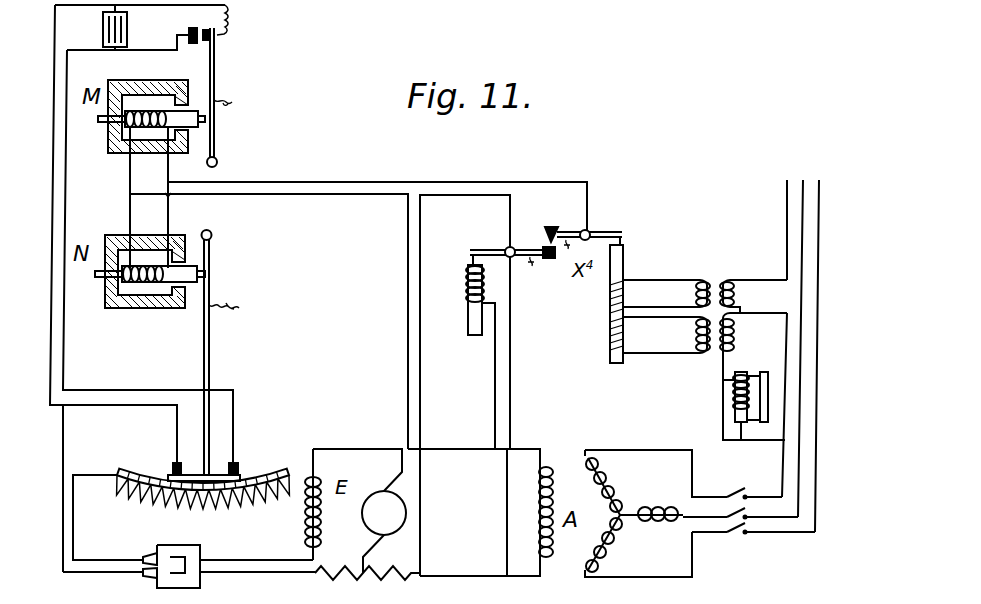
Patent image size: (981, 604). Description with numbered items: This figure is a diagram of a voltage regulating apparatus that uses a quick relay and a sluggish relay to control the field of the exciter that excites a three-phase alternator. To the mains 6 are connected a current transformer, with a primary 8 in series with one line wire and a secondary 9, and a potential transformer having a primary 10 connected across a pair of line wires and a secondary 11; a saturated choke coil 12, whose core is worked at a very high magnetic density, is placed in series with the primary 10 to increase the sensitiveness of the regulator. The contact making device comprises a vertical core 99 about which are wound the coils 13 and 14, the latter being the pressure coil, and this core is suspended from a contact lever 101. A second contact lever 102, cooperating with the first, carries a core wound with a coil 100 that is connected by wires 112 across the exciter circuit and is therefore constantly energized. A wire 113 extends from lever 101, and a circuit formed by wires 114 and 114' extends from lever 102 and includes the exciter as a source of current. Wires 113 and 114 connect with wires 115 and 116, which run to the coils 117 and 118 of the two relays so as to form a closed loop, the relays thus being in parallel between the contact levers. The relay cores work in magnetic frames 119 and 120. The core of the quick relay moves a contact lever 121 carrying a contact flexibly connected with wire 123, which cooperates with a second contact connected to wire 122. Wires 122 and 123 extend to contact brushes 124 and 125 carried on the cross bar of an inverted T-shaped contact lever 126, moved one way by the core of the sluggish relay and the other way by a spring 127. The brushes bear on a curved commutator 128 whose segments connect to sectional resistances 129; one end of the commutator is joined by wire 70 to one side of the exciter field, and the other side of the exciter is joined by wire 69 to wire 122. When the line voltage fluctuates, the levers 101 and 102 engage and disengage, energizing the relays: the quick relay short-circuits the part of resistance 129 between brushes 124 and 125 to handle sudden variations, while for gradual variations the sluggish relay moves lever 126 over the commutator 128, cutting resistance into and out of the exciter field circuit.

The mains 6 is at (818, 217).
The current transformer primary 8 is at (733, 295).
The current transformer secondary 9 is at (703, 288).
The potential transformer primary 10 is at (733, 340).
The potential transformer secondary 11 is at (703, 333).
The saturated choke coil 12 is at (735, 395).
The coil 13 is at (610, 293).
The pressure coil 14 is at (610, 330).
The wire 69 is at (62, 550).
The wire 70 is at (73, 523).
The vertical core 99 is at (623, 266).
The coil 100 is at (468, 290).
The contact lever 101 is at (597, 234).
The second contact lever 102 is at (522, 247).
The wires 112 is at (508, 372).
The wire 113 is at (300, 188).
The wire 114 is at (269, 321).
The wire 114' is at (465, 385).
The wire 115 is at (168, 167).
The wire 116 is at (128, 182).
The relay coil 117 is at (133, 113).
The relay coil 118 is at (133, 268).
The magnetic frame 119 is at (140, 84).
The magnetic frame 120 is at (143, 238).
The contact lever 121 is at (215, 70).
The wire 122 is at (67, 327).
The wire 123 is at (50, 347).
The contact brush 124 is at (173, 463).
The contact brush 125 is at (235, 465).
The inverted T-shaped contact lever 126 is at (212, 362).
The spring 127 is at (227, 305).
The curved commutator 128 is at (282, 475).
The sectional resistances 129 is at (240, 507).